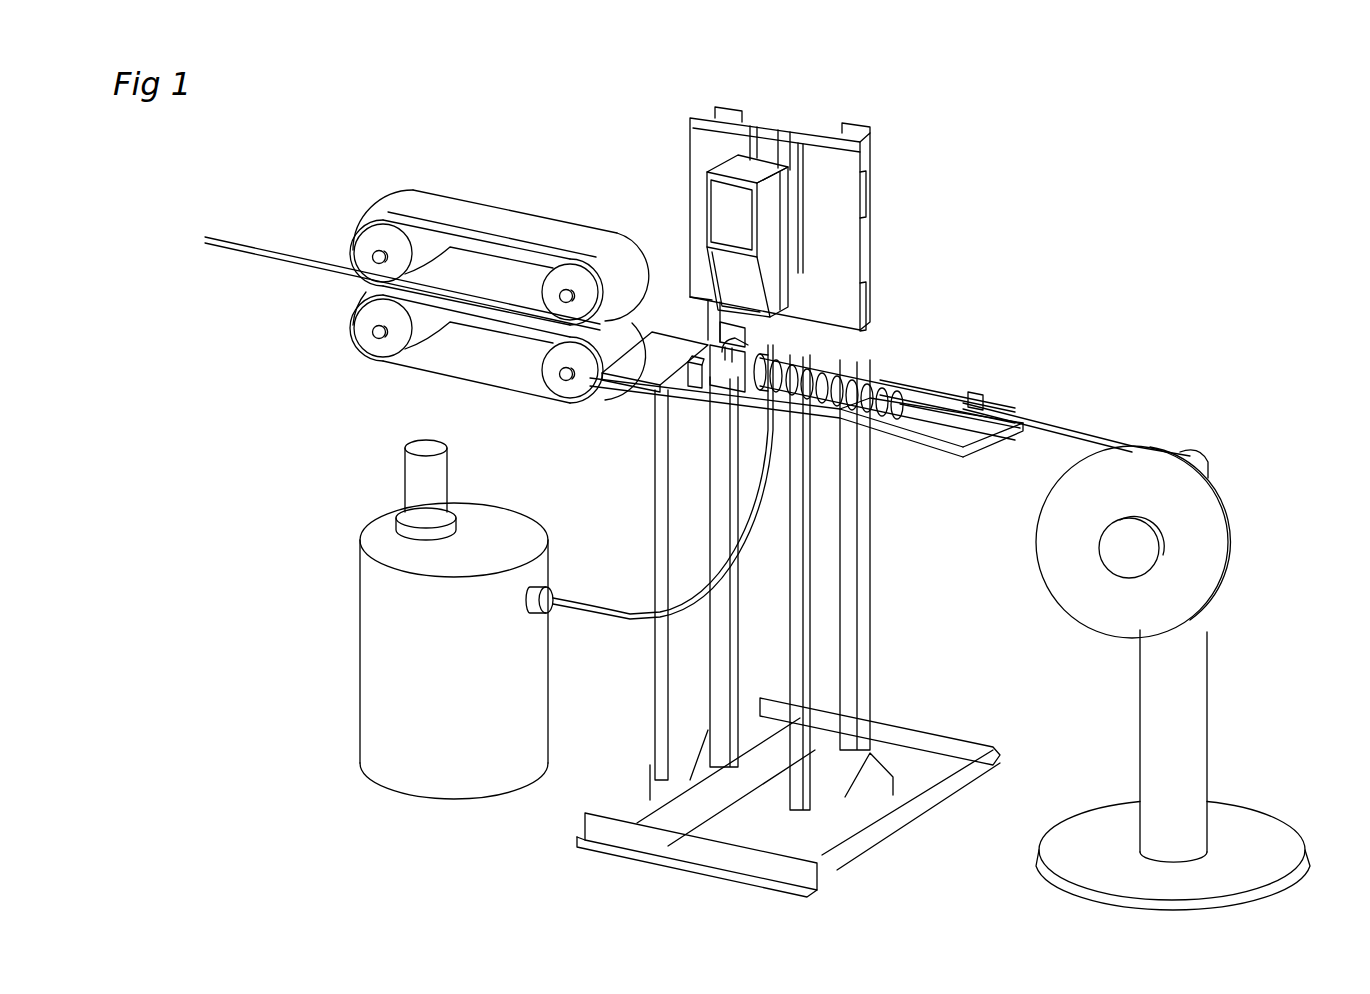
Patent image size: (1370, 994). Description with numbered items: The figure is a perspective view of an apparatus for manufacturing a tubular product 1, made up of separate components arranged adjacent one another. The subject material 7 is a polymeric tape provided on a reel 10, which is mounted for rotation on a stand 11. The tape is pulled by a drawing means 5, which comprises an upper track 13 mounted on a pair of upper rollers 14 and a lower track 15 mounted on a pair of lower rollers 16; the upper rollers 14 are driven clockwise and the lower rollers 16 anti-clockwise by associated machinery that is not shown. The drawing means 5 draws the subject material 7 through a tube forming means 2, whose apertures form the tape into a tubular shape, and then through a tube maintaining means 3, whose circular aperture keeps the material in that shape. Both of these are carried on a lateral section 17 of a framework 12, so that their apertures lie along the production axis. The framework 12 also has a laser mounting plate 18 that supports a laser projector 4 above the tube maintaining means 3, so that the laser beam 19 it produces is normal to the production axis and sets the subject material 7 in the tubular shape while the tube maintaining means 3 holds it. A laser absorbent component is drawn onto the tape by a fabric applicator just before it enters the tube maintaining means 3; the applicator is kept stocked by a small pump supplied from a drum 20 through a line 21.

The apparatus for manufacturing a tubular product 1 is at (298, 160).
The tube forming means 2 is at (950, 328).
The tube maintaining means 3 is at (694, 331).
The laser projector 4 is at (712, 208).
The drawing means 5 is at (498, 194).
The subject material 7 is at (1064, 422).
The reel 10 is at (1037, 548).
The stand 11 is at (1138, 716).
The framework 12 is at (654, 500).
The upper track 13 is at (448, 200).
The upper rollers 14 is at (377, 223).
The lower track 15 is at (463, 382).
The lower rollers 16 is at (390, 362).
The lateral section 17 is at (903, 442).
The laser mounting plate 18 is at (862, 253).
The laser beam 19 is at (722, 330).
The drum 20 is at (360, 663).
The line 21 is at (620, 625).